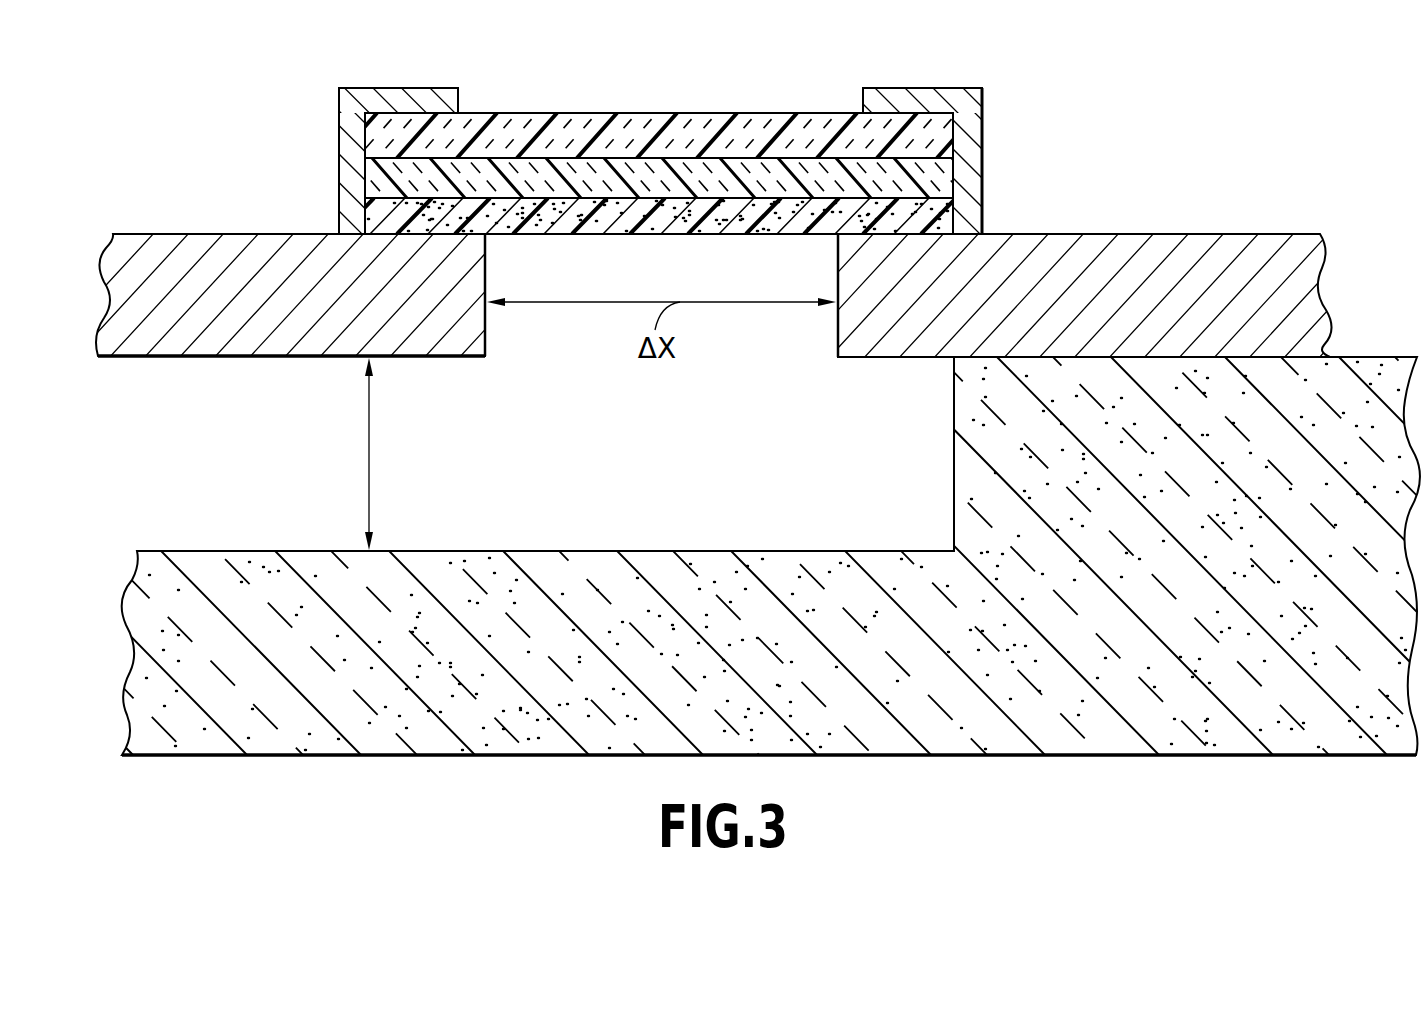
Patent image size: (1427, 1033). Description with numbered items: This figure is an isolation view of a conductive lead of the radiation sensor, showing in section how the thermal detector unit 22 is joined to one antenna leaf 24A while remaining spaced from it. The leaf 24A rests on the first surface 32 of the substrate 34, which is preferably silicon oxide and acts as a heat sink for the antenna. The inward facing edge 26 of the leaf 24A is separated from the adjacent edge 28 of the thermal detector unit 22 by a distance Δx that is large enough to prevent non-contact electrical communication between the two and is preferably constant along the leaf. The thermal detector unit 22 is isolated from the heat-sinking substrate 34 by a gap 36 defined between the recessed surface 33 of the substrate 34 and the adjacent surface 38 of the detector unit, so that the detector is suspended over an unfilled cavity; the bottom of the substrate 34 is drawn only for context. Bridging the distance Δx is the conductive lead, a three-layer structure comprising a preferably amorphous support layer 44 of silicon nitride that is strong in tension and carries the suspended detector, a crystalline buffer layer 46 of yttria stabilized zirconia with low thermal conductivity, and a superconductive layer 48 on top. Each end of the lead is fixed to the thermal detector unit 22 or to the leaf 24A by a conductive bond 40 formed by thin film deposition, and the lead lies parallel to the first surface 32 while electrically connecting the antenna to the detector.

The thermal detector unit 22 is at (190, 256).
The antenna leaf 24A is at (1262, 245).
The inward facing edge of leaf 26 is at (838, 323).
The edge of thermal detector unit 28 is at (487, 333).
The first surface of substrate 32 is at (1382, 357).
The recessed surface of substrate 33 is at (302, 552).
The substrate 34 is at (1270, 733).
The gap 36 is at (369, 443).
The adjacent surface of thermal detector unit 38 is at (130, 357).
The conductive bond 40 is at (410, 100).
The support layer 44 is at (957, 220).
The buffer layer 46 is at (957, 180).
The superconductive layer 48 is at (958, 140).